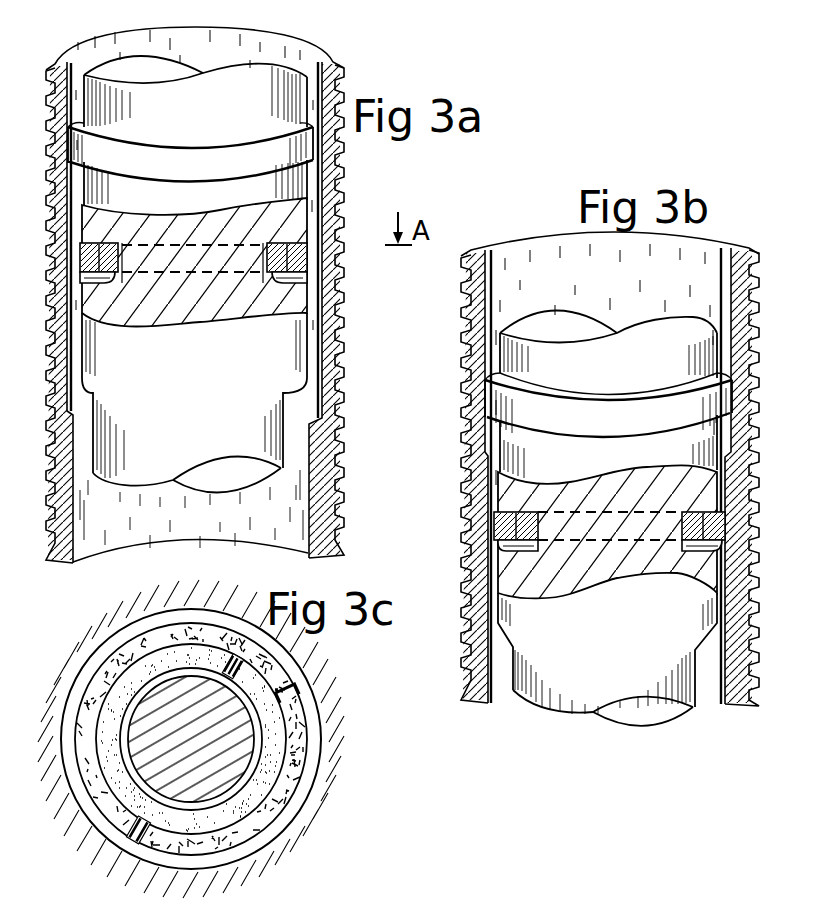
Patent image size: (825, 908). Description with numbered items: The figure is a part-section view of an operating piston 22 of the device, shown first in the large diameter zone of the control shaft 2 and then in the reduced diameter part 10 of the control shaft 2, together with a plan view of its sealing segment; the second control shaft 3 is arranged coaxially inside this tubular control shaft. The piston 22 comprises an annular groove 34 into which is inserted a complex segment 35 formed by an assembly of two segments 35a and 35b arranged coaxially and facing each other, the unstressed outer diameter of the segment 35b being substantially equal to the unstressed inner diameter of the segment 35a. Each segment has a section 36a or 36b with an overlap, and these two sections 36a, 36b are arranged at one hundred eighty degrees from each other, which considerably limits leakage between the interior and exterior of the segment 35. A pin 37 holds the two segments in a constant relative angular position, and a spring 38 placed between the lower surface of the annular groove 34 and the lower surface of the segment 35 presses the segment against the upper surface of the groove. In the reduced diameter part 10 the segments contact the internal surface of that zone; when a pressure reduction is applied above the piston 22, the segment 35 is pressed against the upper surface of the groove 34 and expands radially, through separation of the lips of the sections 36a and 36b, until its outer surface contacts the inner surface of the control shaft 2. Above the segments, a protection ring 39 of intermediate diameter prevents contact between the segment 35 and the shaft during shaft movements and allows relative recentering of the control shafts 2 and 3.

In FIG. 3A, the control shaft 2 is at (323, 345).
In FIG. 3B, the control shaft 2 is at (743, 672).
In FIG. 3A, the second control shaft 3 is at (204, 290).
In FIG. 3A, the reduced diameter part 10 is at (336, 428).
In FIG. 3B, the reduced diameter part 10 is at (743, 457).
In FIG. 3A, the piston 22 is at (270, 190).
In FIG. 3A, the annular groove 34 is at (300, 243).
In FIG. 3B, the annular groove 34 is at (607, 531).
In FIG. 3A, the complex segment 35 is at (195, 280).
In FIG. 3B, the complex segment 35 is at (600, 531).
In FIG. 3A, the segment 35a is at (92, 258).
In FIG. 3B, the segment 35a is at (496, 518).
In FIG. 3C, the segment 35a is at (297, 747).
In FIG. 3A, the segment 35b is at (84, 288).
In FIG. 3B, the segment 35b is at (500, 552).
In FIG. 3C, the segment 35b is at (272, 715).
In FIG. 3C, the section with overlap 36a is at (140, 837).
In FIG. 3C, the section with overlap 36b is at (222, 660).
In FIG. 3C, the pin 37 is at (295, 687).
In FIG. 3A, the spring 38 is at (308, 284).
In FIG. 3B, the spring 38 is at (727, 557).
In FIG. 3A, the protection ring 39 is at (60, 70).
In FIG. 3B, the protection ring 39 is at (688, 412).